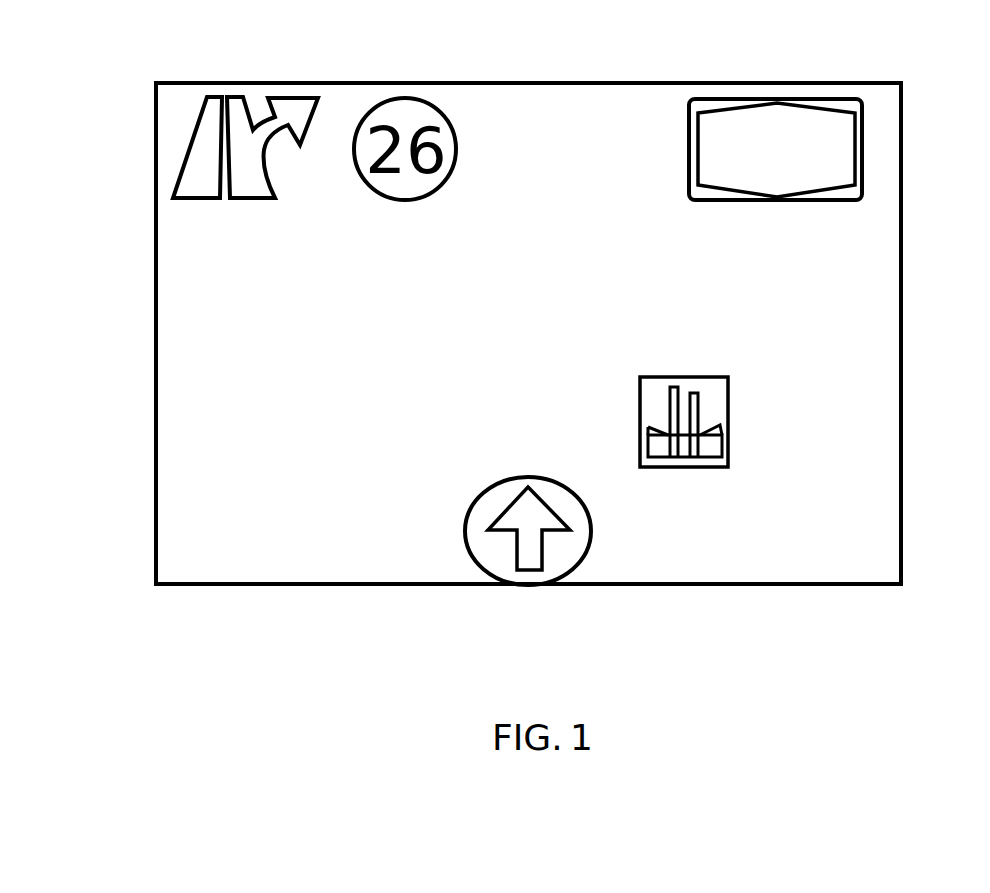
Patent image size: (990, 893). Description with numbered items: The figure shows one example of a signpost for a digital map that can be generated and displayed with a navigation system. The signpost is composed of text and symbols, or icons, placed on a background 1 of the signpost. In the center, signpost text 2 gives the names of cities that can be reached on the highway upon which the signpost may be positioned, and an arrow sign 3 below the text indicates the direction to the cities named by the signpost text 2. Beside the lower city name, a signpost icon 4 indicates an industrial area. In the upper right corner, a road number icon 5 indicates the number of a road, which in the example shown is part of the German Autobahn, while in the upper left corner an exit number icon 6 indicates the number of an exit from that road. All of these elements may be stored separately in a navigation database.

The background 1 is at (687, 552).
The signpost text 2 is at (287, 293).
The arrow sign 3 is at (465, 562).
The signpost icon 4 is at (742, 437).
The road number icon 5 is at (845, 208).
The exit number icon 6 is at (248, 212).